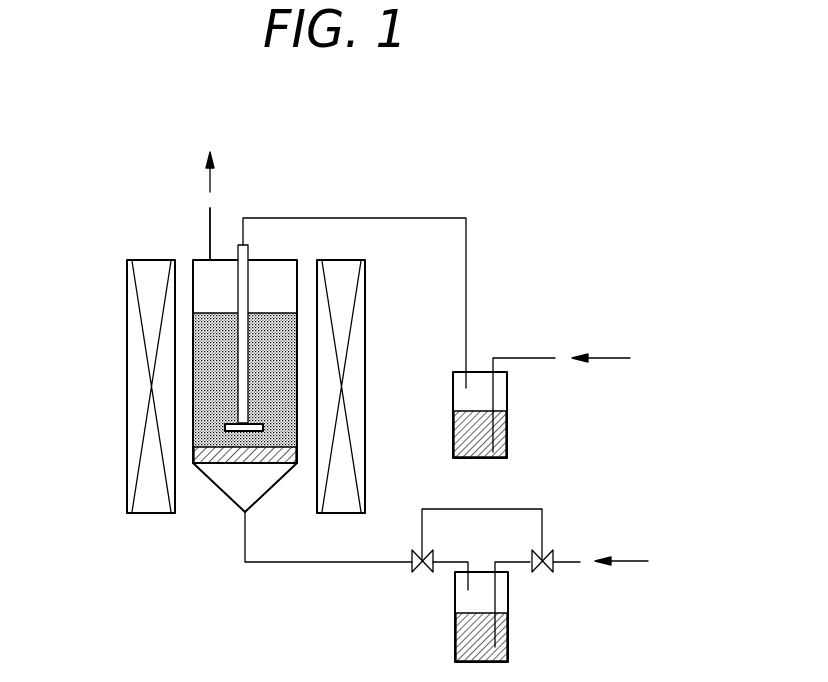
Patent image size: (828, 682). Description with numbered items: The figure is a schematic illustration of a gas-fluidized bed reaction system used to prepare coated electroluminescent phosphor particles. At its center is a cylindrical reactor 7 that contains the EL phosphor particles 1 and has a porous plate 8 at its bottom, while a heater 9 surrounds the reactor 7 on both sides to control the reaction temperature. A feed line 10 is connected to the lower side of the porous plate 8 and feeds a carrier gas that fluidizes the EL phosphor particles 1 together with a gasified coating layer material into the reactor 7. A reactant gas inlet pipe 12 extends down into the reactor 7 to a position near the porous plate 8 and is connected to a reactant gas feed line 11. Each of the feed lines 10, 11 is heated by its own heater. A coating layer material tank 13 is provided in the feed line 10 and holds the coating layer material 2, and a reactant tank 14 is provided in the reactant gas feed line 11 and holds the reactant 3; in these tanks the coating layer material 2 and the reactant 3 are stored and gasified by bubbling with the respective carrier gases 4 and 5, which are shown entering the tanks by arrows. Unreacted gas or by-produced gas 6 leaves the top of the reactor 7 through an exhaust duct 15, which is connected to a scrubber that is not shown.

The EL phosphor particles 1 is at (212, 333).
The coating layer material 2 is at (508, 638).
The reactant 3 is at (505, 437).
The carrier gas 4 is at (633, 561).
The carrier gas 5 is at (571, 398).
The unreacted gas or by-produced gas 6 is at (210, 190).
The cylindrical reactor 7 is at (195, 400).
The porous plate 8 is at (242, 455).
The heater 9 is at (148, 457).
The feed line 10 is at (360, 562).
The reactant gas feed line 11 is at (393, 217).
The reactant gas inlet pipe 12 is at (242, 285).
The coating layer material tank 13 is at (508, 588).
The reactant tank 14 is at (507, 390).
The exhaust duct 15 is at (210, 233).